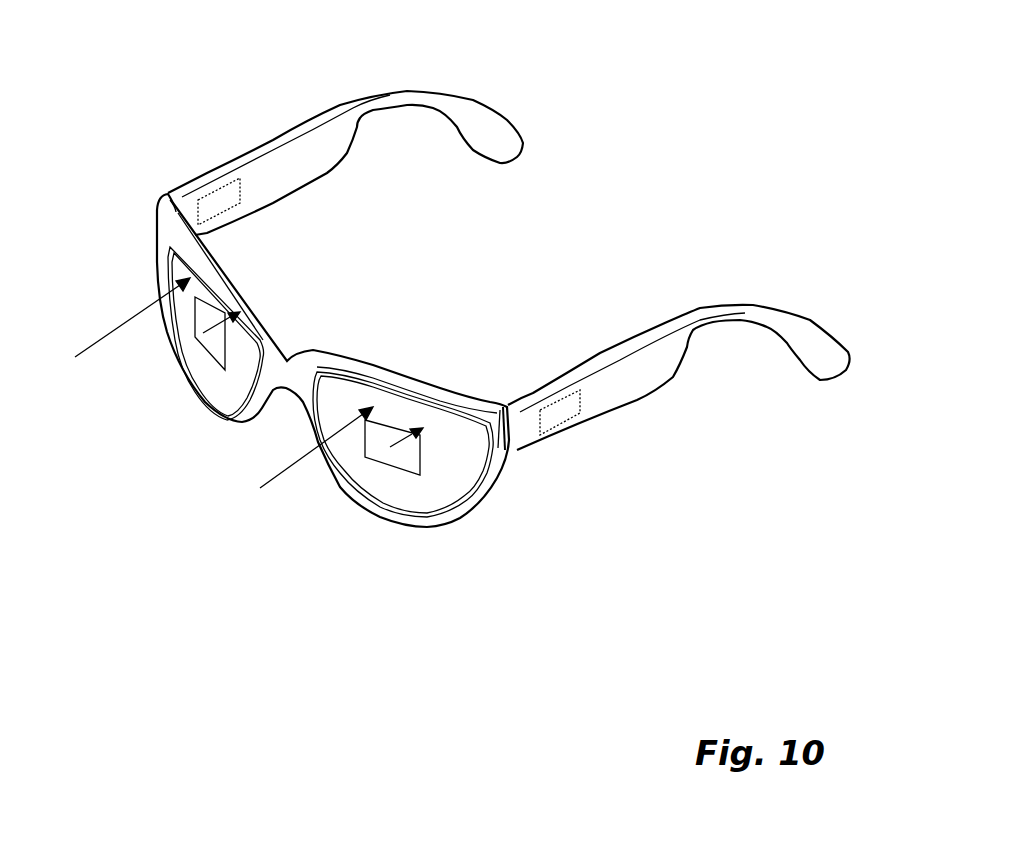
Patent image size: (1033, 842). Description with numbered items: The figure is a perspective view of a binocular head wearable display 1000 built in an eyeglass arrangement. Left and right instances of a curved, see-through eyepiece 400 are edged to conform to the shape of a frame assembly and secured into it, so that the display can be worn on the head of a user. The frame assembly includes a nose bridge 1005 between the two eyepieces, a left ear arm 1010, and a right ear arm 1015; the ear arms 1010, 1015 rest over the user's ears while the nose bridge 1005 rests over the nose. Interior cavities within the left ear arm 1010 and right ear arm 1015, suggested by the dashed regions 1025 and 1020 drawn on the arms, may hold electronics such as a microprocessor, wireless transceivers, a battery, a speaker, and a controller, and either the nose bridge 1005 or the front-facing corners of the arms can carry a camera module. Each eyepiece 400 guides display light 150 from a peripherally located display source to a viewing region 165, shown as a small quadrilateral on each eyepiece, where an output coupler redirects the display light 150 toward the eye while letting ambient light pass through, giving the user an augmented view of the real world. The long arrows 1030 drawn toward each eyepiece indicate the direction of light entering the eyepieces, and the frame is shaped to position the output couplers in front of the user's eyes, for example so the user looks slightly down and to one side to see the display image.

The head wearable display 1000 is at (661, 81).
The nose bridge 1005 is at (287, 363).
The left ear arm 1010 is at (673, 322).
The right ear arm 1015 is at (297, 130).
The electronics module in right temple 1020 is at (560, 413).
The electronics module in left temple 1025 is at (220, 203).
The display light 150 is at (228, 316).
The viewing region 165 is at (203, 357).
The eyepiece 400 is at (181, 322).
The light direction 1030 is at (90, 344).